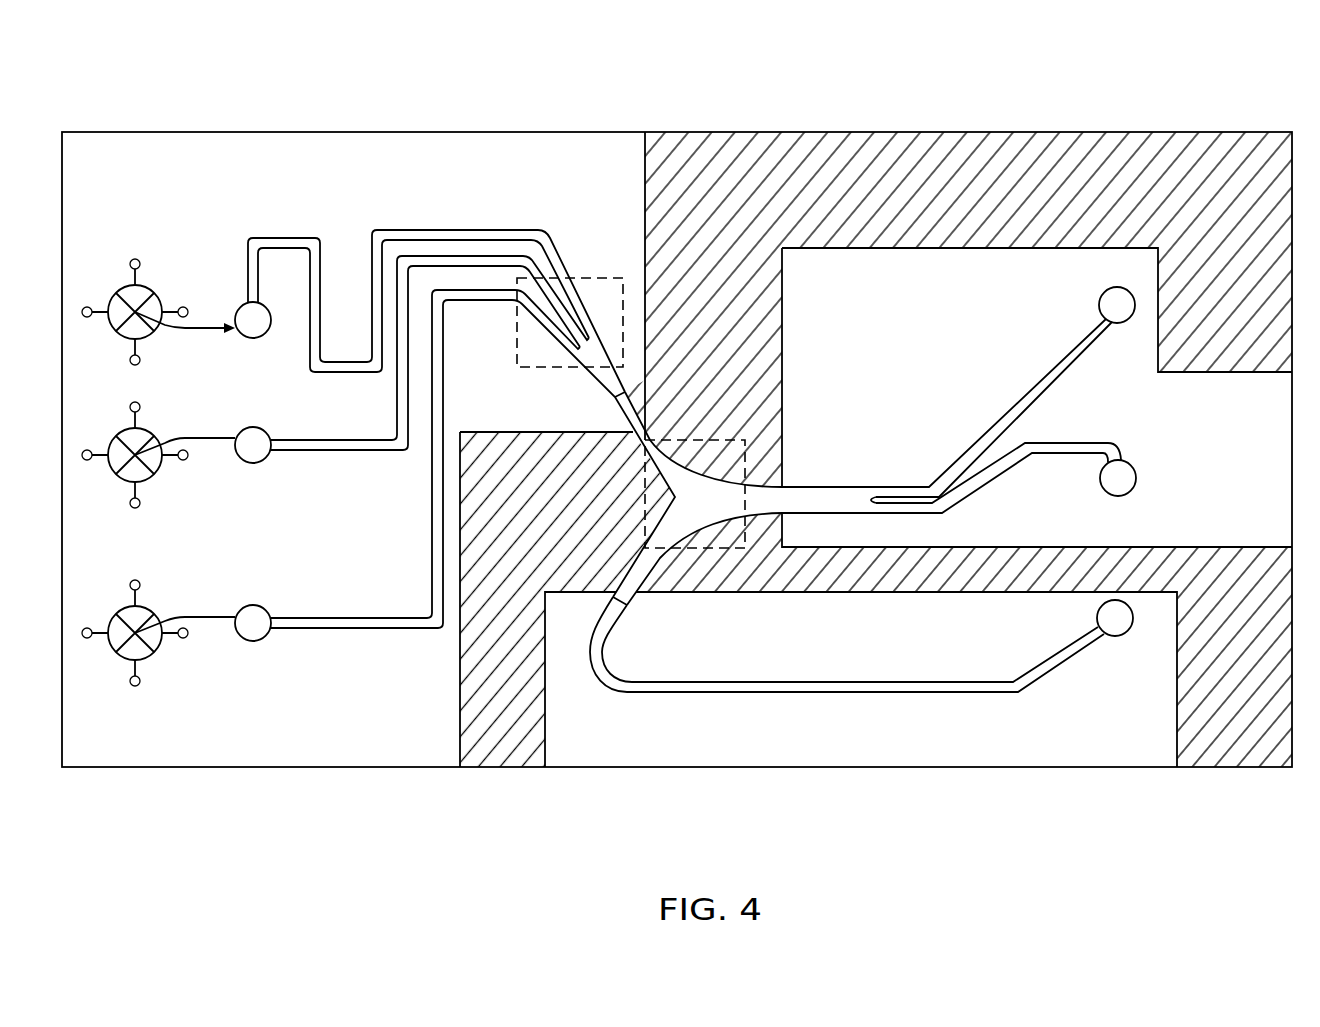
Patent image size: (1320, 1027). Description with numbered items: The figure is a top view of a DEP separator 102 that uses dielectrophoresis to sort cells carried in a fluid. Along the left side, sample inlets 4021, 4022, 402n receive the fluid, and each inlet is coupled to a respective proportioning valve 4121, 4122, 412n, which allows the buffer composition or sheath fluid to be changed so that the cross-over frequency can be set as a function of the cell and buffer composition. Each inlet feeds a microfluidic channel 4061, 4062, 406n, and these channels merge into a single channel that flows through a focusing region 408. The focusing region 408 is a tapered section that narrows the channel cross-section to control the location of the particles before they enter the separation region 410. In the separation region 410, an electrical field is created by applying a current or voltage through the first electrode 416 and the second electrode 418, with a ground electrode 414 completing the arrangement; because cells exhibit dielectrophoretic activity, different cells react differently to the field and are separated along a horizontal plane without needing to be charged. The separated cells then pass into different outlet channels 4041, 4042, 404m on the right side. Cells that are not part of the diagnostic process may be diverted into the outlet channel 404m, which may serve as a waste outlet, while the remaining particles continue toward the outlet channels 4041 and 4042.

The DEP separator 102 is at (1015, 88).
The proportioning valve 4121 is at (108, 303).
The proportioning valve 4122 is at (108, 446).
The proportioning valve 412n is at (108, 624).
The sample inlet 4021 is at (253, 338).
The sample inlet 4022 is at (253, 463).
The sample inlet 402n is at (259, 604).
The microfluidic channel 4061 is at (412, 228).
The microfluidic channel 4062 is at (340, 453).
The microfluidic channel 406n is at (345, 615).
The focusing region 408 is at (588, 278).
The separation region 410 is at (697, 440).
The ground electrode 414 is at (592, 568).
The first electrode 416 is at (712, 468).
The second electrode 418 is at (755, 568).
The outlet channel 4041 is at (1105, 293).
The outlet channel 4042 is at (1137, 473).
The outlet channel 404m is at (1118, 636).